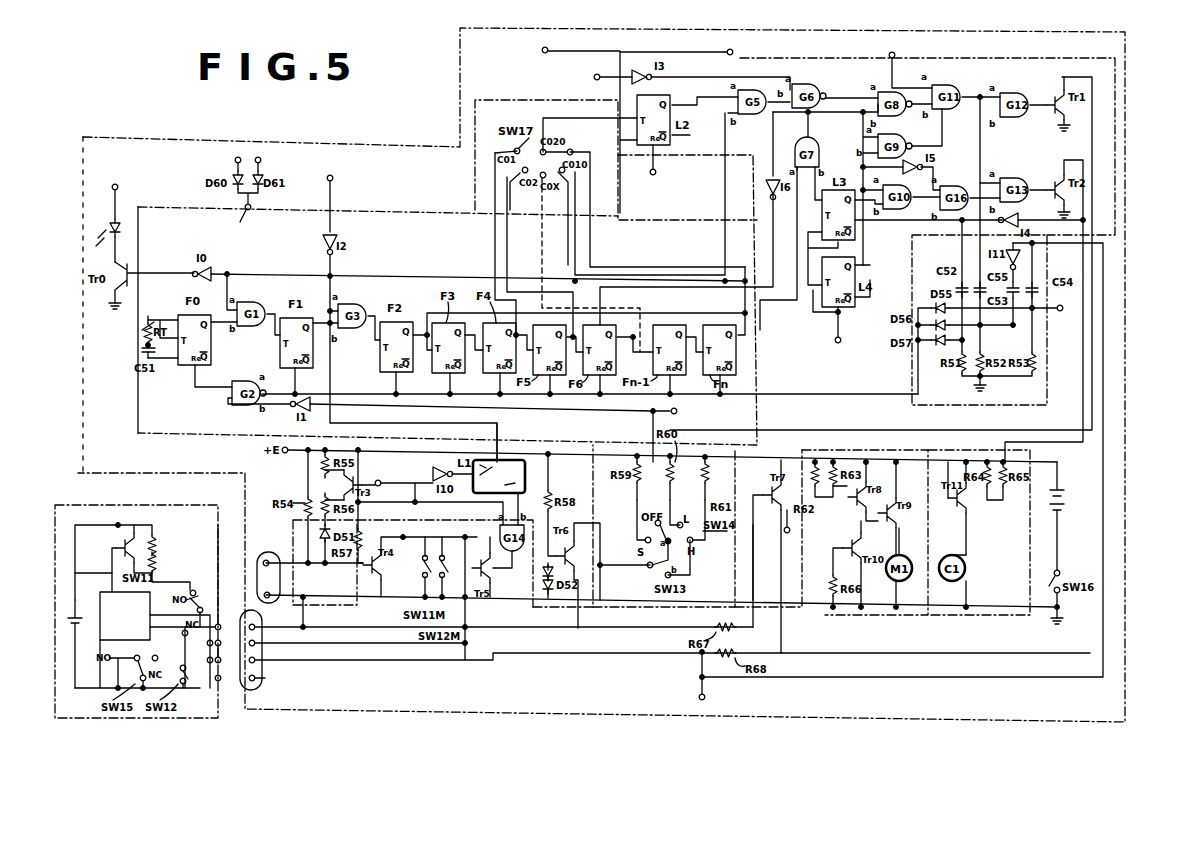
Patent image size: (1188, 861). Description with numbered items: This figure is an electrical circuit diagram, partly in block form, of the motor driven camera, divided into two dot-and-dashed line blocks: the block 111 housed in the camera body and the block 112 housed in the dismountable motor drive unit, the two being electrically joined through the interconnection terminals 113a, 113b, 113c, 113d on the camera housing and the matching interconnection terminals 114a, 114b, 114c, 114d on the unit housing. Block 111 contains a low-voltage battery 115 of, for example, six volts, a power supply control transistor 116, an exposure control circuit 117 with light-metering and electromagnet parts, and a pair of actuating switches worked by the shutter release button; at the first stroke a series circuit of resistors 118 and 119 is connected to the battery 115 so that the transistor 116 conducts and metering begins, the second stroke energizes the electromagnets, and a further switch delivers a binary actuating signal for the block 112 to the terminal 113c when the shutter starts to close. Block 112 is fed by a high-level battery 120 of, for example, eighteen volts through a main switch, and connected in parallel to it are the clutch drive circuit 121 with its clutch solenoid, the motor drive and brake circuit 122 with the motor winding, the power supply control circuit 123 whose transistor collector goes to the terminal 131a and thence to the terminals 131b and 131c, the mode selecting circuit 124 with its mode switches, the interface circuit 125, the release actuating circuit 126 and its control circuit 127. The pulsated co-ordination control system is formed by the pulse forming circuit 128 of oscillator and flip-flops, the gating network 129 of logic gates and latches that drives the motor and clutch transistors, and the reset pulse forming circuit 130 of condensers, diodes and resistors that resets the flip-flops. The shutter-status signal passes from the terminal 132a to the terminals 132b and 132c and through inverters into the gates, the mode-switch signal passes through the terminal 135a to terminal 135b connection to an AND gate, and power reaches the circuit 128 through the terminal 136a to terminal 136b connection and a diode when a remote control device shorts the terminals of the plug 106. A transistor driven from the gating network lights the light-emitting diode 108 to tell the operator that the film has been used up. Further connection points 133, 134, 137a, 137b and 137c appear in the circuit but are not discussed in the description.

The plug 106 is at (266, 553).
The light-emitting diode 108 is at (106, 225).
The camera body circuit block 111 is at (83, 505).
The motor drive unit circuit block 112 is at (464, 714).
The interconnection terminal 113a is at (218, 615).
The interconnection terminal 113b is at (217, 661).
The interconnection terminal 113c is at (218, 667).
The interconnection terminal 113d is at (218, 683).
The interconnection terminal 114a is at (255, 645).
The interconnection terminal 114b is at (266, 635).
The interconnection terminal 114c is at (259, 675).
The interconnection terminal 114d is at (261, 691).
The battery 115 is at (85, 644).
The power supply control transistor 116 is at (120, 548).
The exposure control circuit 117 is at (125, 616).
The resistor 118 is at (162, 545).
The resistor 119 is at (162, 562).
The battery 120 is at (1058, 504).
The clutch drive circuit 121 is at (959, 617).
The motor drive and brake circuit 122 is at (844, 617).
The power supply control circuit 123 is at (771, 623).
The mode selecting circuit 124 is at (626, 445).
The interface circuit 125 is at (552, 445).
The release actuating circuit 126 is at (382, 602).
The control circuit 127 is at (328, 602).
The pulse forming circuit 128 is at (162, 207).
The gating network 129 is at (787, 331).
The reset pulse forming circuit 130 is at (1032, 414).
The terminal 131a is at (779, 555).
The terminal 131b is at (562, 51).
The terminal 131c is at (273, 159).
The terminal 132a is at (718, 699).
The terminal 132b is at (347, 201).
The terminal 132c is at (597, 78).
The terminal 133 is at (689, 46).
The switch contact 134 is at (244, 222).
The terminal 135a is at (510, 433).
The terminal 135b is at (910, 64).
The terminal 136a is at (394, 478).
The terminal 136b is at (222, 159).
The terminal 137a is at (654, 169).
The terminal 137b is at (1065, 318).
The terminal 137c is at (837, 334).